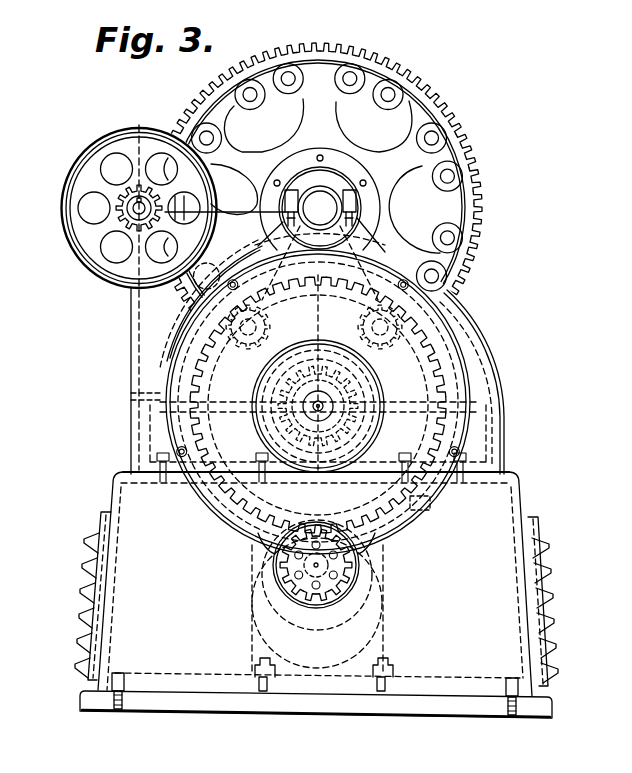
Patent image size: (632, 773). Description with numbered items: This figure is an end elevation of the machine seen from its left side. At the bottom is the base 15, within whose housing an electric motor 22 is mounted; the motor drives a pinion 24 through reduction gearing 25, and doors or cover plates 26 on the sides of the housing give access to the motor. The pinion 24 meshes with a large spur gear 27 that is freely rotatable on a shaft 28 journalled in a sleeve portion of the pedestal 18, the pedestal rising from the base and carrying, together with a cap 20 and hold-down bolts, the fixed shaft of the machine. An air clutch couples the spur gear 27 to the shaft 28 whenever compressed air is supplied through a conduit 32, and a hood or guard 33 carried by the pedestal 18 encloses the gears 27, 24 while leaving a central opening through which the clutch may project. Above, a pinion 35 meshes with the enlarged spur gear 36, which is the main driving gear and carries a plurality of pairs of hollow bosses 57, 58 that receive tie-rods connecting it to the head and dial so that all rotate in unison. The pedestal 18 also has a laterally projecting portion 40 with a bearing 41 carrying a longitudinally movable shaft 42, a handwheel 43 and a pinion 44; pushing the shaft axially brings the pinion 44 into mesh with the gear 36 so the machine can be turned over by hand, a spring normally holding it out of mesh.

The base 15 is at (497, 505).
The pedestal 18 is at (490, 368).
The cap 20 is at (313, 183).
The electric motor 22 is at (385, 613).
The pinion 24 is at (262, 545).
The reduction gearing 25 is at (257, 567).
The cover plates 26 is at (97, 539).
The large spur gear 27 is at (422, 504).
The shaft 28 is at (256, 427).
The conduit 32 is at (322, 408).
The hood 33 is at (445, 350).
The pinion 35 is at (380, 385).
The enlarged spur gear 36 is at (481, 168).
The laterally projecting portion 40 is at (146, 303).
The bearing 41 is at (128, 215).
The shaft 42 is at (117, 199).
The handwheel 43 is at (92, 150).
The pinion 44 is at (140, 131).
The hollow boss 57 is at (288, 94).
The hollow boss 58 is at (251, 110).